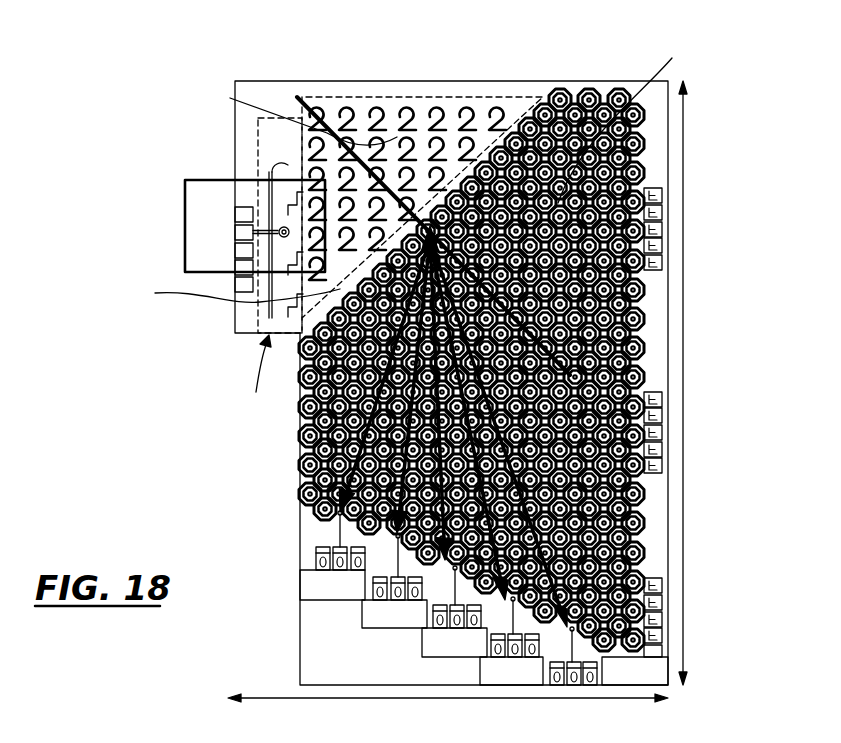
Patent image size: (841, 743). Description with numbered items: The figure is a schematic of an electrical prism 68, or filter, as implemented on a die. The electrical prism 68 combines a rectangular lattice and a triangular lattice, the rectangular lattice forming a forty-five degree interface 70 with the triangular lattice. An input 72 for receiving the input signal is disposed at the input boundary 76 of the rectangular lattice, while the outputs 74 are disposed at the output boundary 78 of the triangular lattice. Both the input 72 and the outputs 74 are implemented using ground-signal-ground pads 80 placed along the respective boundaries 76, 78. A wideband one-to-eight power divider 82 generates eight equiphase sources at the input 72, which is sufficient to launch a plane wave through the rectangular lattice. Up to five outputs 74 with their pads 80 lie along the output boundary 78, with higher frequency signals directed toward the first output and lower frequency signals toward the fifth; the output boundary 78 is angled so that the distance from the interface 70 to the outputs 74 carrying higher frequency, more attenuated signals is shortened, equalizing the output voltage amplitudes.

The electrical prism 68 is at (730, 170).
The interface 70 is at (543, 96).
The input 72 is at (242, 218).
The output 74 is at (552, 674).
The input boundary 76 is at (297, 97).
The output boundary 78 is at (338, 513).
The ground-signal-ground pads 80 is at (237, 250).
The power divider 82 is at (270, 313).